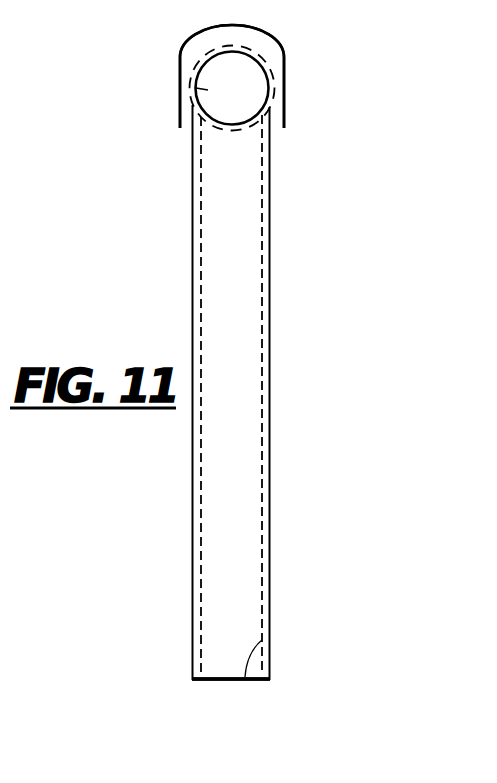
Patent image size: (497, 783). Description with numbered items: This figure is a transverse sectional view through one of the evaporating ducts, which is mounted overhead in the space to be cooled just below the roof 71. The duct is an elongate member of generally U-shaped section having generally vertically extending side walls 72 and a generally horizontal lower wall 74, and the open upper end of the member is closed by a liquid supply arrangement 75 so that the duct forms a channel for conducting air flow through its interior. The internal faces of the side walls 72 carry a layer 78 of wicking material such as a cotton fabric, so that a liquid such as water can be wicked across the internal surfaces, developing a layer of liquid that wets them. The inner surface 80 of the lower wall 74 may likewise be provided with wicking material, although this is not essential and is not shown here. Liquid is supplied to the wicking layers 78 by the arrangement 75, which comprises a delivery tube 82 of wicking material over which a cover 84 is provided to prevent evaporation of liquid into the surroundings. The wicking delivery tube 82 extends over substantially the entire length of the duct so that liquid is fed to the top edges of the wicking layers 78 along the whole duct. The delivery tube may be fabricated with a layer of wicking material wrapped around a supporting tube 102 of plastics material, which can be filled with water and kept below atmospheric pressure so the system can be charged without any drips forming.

The roof 71 is at (286, 179).
The side walls 72 is at (193, 468).
The lower wall 74 is at (230, 680).
The liquid supply arrangement 75 is at (242, 96).
The layer of wicking material 78 is at (145, 283).
The inner surface 80 is at (262, 640).
The delivery tube 82 is at (250, 47).
The cover 84 is at (193, 38).
The supporting tube 102 is at (203, 99).